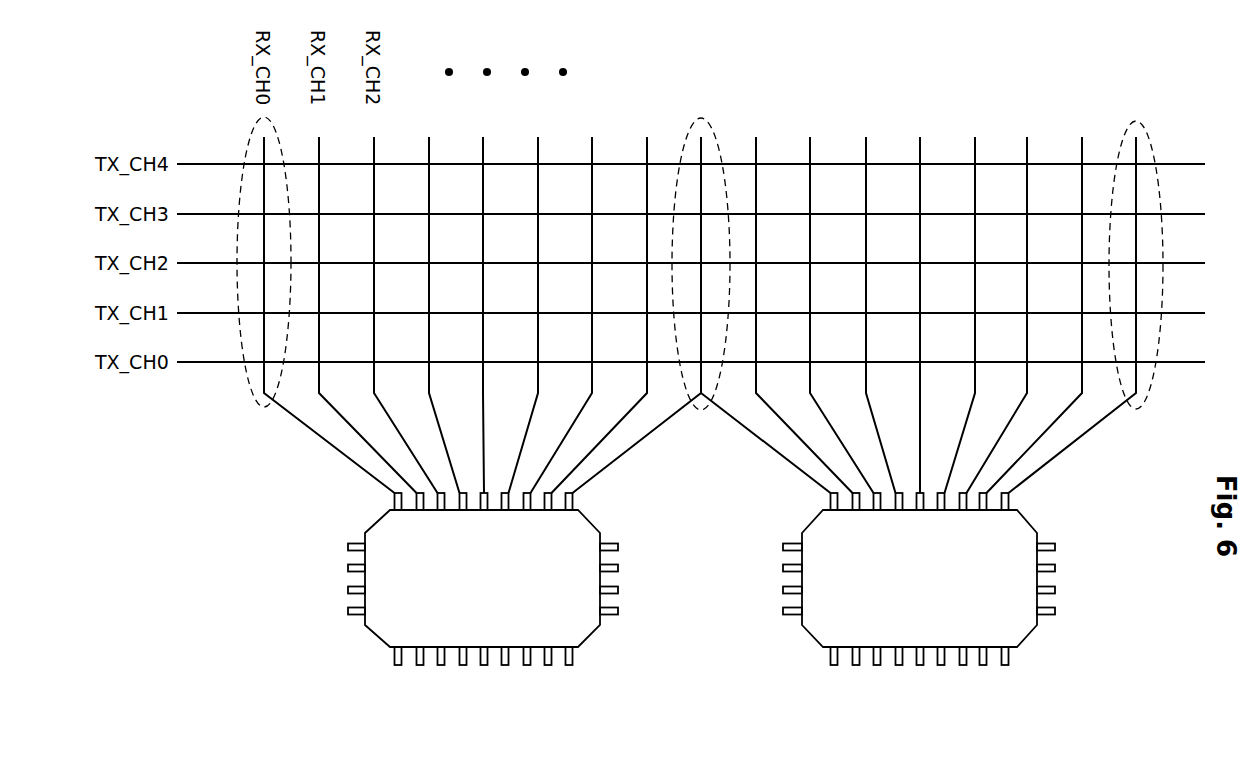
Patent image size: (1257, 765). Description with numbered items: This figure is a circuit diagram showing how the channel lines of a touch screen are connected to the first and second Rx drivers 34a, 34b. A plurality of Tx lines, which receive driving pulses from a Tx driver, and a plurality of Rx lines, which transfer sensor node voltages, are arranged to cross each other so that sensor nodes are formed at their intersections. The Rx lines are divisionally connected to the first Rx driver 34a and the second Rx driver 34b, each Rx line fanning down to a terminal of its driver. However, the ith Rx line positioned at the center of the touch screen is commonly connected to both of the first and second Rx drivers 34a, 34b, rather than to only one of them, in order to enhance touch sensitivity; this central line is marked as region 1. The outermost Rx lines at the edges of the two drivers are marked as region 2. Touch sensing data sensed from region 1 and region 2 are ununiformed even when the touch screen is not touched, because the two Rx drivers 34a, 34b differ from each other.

The first Rx driver 34a is at (463, 594).
The second Rx driver 34b is at (898, 594).
The region ① 1 is at (702, 302).
The region ② 2 is at (691, 301).